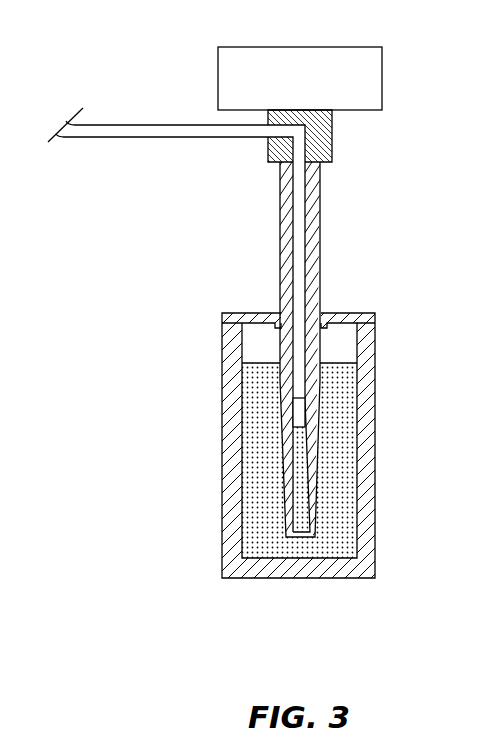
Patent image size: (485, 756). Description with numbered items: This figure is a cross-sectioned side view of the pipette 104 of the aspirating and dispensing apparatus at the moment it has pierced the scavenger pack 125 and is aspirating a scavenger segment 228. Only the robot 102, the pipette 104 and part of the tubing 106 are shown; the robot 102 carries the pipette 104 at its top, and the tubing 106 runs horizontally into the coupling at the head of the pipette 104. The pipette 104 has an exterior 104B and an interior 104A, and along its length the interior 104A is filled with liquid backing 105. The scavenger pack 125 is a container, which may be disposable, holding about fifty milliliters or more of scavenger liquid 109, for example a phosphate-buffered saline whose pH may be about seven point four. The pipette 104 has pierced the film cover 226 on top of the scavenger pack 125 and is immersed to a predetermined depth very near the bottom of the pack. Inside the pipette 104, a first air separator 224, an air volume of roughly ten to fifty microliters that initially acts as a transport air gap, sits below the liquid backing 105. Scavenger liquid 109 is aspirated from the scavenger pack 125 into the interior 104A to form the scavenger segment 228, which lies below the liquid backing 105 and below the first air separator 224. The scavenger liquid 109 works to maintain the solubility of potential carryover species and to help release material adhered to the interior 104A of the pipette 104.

The robot 102 is at (338, 47).
The pipette 104 is at (285, 323).
The interior of the pipette 104A is at (292, 243).
The exterior of the pipette 104B is at (280, 200).
The liquid backing 105 is at (298, 273).
The tubing 106 is at (158, 138).
The scavenger liquid 109 is at (262, 505).
The scavenger pack 125 is at (288, 416).
The first air separator 224 is at (300, 410).
The film cover 226 is at (343, 312).
The scavenger segment 228 is at (297, 474).